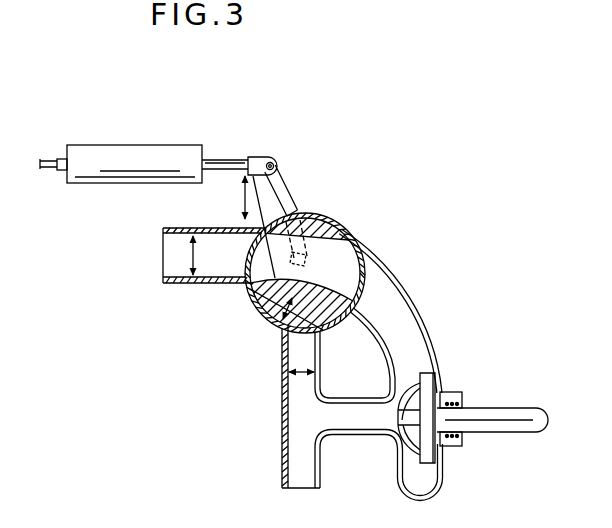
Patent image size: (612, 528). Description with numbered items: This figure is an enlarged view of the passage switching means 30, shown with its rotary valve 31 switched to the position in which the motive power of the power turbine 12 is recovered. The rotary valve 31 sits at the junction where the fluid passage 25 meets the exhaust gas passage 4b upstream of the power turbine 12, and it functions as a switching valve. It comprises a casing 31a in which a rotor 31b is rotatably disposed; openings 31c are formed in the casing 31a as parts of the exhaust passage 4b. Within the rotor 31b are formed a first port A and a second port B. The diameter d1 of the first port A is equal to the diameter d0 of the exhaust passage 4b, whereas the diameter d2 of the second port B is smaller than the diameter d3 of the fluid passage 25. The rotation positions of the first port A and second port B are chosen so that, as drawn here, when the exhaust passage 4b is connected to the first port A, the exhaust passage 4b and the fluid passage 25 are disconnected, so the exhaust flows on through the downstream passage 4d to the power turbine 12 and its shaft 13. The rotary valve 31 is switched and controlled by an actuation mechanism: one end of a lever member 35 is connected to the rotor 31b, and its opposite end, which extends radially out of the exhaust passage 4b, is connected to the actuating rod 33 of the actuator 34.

The exhaust gas passage 4b is at (173, 250).
The outer passage to turbine 4d is at (412, 353).
The power turbine 12 is at (438, 474).
The turbine shaft 13 is at (513, 412).
The fluid passage 25 is at (293, 395).
The passage switching means 30 is at (367, 172).
The rotary valve 31 is at (321, 210).
The casing 31a is at (330, 235).
The rotor 31b is at (347, 231).
The openings 31c is at (248, 250).
The actuating rod 33 is at (232, 162).
The actuator 34 is at (177, 153).
The lever member 35 is at (282, 192).
The first port A is at (338, 270).
The second port B is at (265, 310).
The diameter of the exhaust passage d0 is at (207, 255).
The diameter of the first port d1 is at (231, 197).
The diameter of the second port d2 is at (274, 322).
The diameter of the fluid passage d3 is at (305, 364).